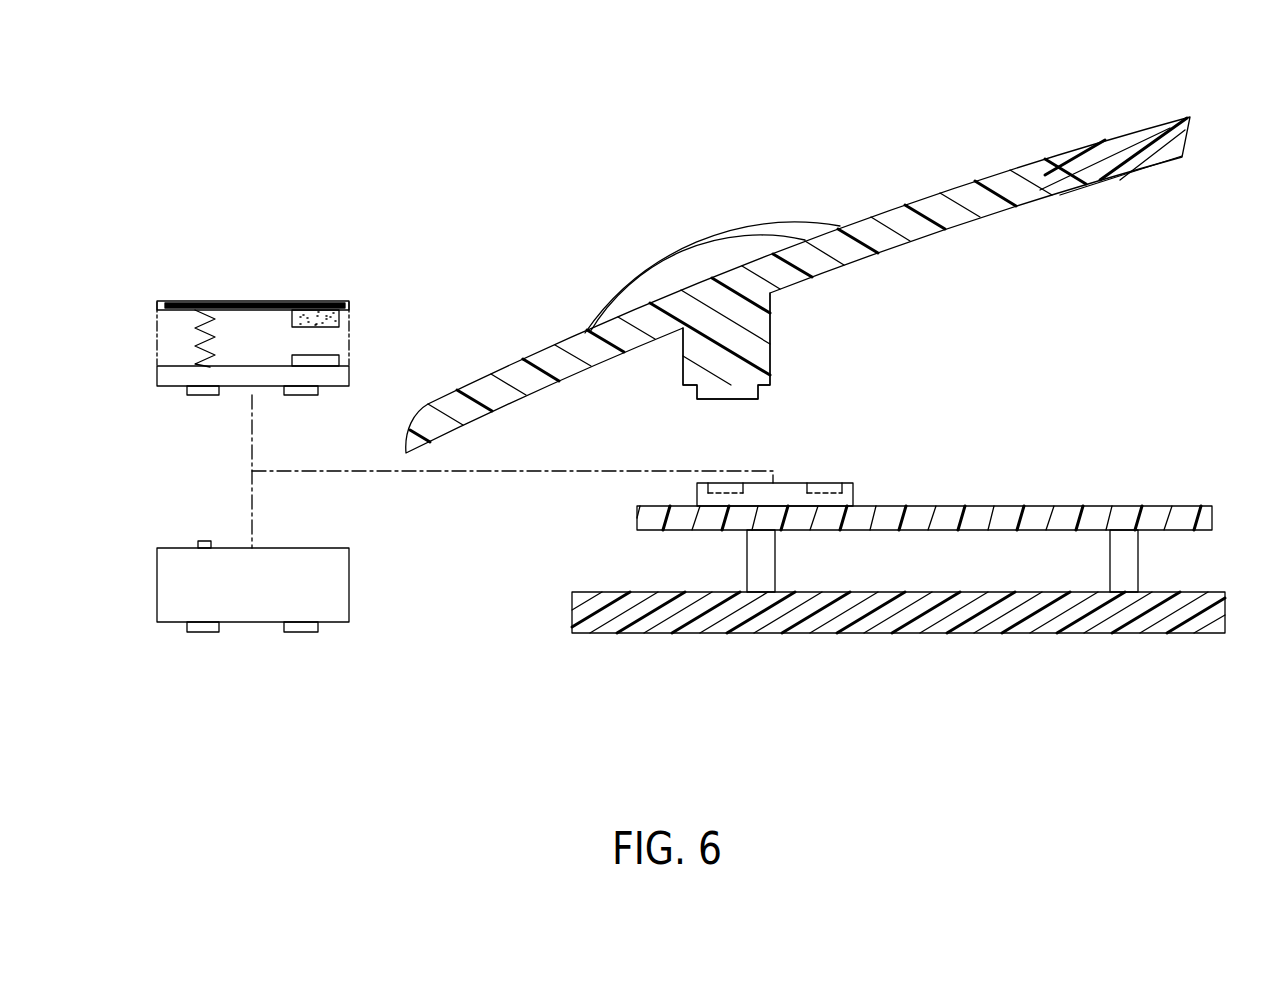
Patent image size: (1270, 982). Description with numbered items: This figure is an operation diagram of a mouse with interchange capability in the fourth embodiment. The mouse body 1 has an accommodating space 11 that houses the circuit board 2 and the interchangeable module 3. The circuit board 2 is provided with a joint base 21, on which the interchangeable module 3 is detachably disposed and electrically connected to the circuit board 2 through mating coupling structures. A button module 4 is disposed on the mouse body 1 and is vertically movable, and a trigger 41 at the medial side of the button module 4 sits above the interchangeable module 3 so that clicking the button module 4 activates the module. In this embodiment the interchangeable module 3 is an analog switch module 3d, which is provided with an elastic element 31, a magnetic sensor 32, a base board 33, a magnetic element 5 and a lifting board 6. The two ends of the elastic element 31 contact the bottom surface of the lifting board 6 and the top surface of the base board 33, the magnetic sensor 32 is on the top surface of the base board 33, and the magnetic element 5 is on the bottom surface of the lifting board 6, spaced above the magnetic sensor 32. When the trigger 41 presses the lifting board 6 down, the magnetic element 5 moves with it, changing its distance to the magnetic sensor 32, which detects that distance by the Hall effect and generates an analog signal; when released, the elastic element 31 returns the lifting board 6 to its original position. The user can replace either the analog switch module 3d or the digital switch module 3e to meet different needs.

The mouse body 1 is at (700, 646).
The circuit board 2 is at (924, 508).
The joint base 21 is at (857, 492).
The interchangeable module 3 is at (296, 427).
The analog switch module 3d is at (283, 308).
The digital switch module 3e is at (364, 588).
The elastic element 31 is at (194, 340).
The magnetic sensor 32 is at (339, 360).
The base board 33 is at (157, 375).
The button module 4 is at (798, 253).
The trigger 41 is at (772, 348).
The accommodating space 11 is at (1080, 243).
The magnetic element 5 is at (339, 312).
The lifting board 6 is at (252, 301).